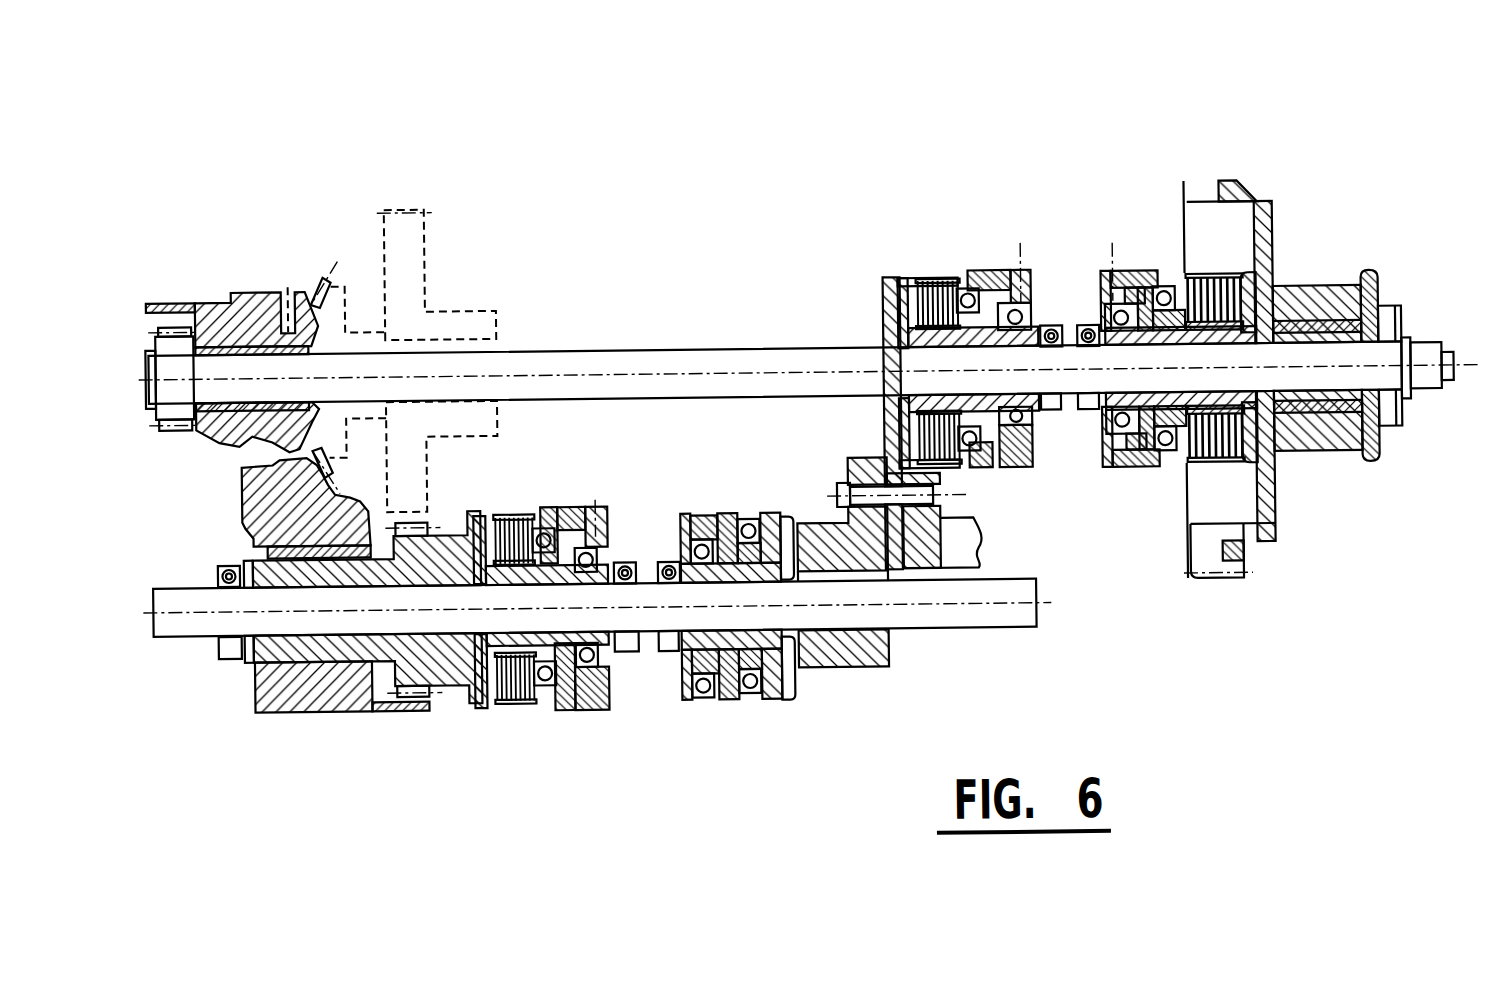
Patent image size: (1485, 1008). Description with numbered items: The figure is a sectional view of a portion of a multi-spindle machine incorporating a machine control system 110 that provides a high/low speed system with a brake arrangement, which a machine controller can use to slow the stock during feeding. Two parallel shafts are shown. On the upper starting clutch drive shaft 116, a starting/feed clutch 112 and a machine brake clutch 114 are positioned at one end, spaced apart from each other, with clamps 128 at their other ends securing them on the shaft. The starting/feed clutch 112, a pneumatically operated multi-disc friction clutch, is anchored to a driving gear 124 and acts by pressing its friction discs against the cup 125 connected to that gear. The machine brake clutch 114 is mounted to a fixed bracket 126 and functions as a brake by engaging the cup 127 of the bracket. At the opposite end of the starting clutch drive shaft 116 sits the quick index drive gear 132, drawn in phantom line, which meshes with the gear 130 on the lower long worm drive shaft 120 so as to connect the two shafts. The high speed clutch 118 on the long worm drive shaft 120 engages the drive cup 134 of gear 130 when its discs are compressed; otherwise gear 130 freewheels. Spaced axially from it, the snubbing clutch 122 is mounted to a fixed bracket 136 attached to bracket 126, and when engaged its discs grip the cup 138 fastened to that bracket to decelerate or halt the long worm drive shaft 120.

The machine control system 110 is at (975, 133).
The starting/feed clutch 112 is at (1178, 316).
The machine brake clutch 114 is at (1002, 320).
The starting clutch drive shaft 116 is at (808, 317).
The high speed clutch 118 is at (572, 495).
The long worm drive shaft 120 is at (598, 680).
The snubbing clutch 122 is at (725, 558).
The driving gear 124 is at (1259, 344).
The cup 125 is at (1221, 339).
The fixed bracket 126 is at (851, 361).
The cup 127 is at (962, 329).
The clamps 128 is at (1072, 320).
The gear 130 is at (356, 579).
The quick index drive gear 132 is at (461, 354).
The drive cup 134 is at (555, 564).
The fixed bracket 136 is at (843, 635).
The cup 138 is at (785, 716).